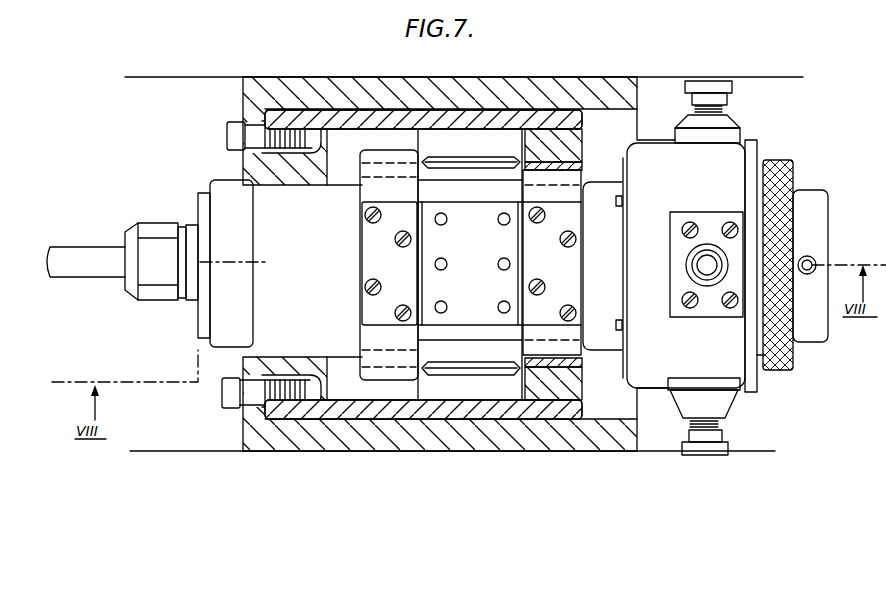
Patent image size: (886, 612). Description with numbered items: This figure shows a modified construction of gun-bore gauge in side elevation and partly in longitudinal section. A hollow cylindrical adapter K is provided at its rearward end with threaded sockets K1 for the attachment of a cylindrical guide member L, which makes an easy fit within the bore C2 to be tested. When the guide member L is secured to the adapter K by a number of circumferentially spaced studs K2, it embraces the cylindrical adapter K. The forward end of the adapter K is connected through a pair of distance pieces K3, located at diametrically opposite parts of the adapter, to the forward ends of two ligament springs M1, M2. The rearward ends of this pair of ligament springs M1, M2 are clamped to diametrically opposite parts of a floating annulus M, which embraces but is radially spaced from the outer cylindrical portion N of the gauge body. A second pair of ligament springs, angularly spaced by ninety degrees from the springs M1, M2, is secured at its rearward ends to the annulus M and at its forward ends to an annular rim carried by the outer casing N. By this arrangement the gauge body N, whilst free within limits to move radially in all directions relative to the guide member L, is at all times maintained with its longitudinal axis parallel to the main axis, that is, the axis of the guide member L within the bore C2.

The hollow cylindrical adapter K is at (353, 117).
The threaded sockets K1 is at (286, 122).
The studs K2 is at (284, 150).
The distance pieces K3 is at (586, 150).
The cylindrical guide member L is at (432, 90).
The floating annulus M is at (378, 245).
The ligament spring M1 is at (483, 158).
The ligament spring M2 is at (470, 375).
The outer cylindrical portion of the gauge body N is at (263, 320).
The bore C2 is at (162, 452).